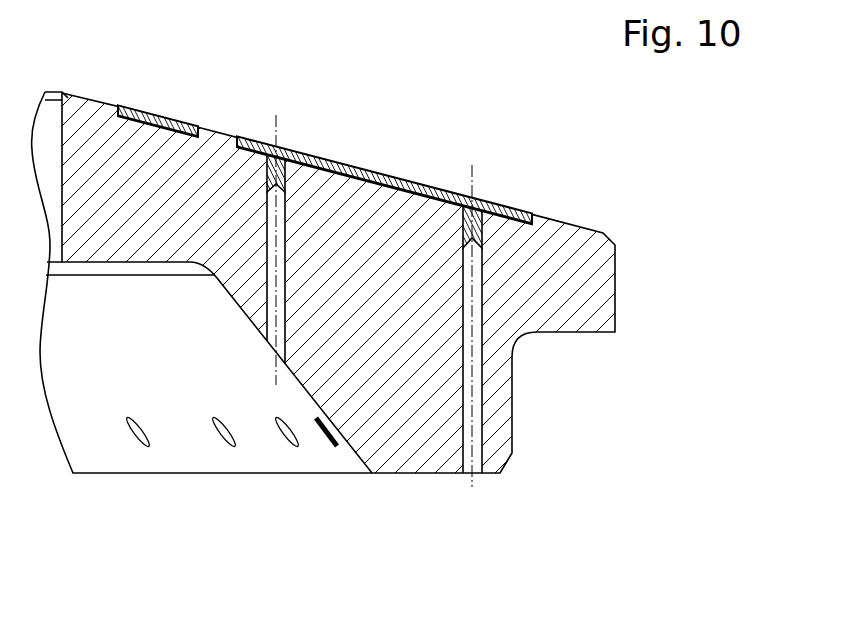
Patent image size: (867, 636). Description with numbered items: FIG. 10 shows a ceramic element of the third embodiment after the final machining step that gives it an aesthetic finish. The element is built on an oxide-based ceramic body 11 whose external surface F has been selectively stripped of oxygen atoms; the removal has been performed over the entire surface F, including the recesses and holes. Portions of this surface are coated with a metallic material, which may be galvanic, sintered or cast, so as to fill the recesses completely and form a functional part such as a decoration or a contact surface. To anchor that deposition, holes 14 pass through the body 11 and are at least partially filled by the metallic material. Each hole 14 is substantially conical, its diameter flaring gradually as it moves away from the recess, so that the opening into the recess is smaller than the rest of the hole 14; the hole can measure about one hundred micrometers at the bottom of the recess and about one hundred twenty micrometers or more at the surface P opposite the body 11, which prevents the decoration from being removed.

The oxide-based body 11 is at (603, 275).
The hole 14 is at (477, 362).
The external surface F is at (493, 142).
The surface opposite body P is at (413, 482).